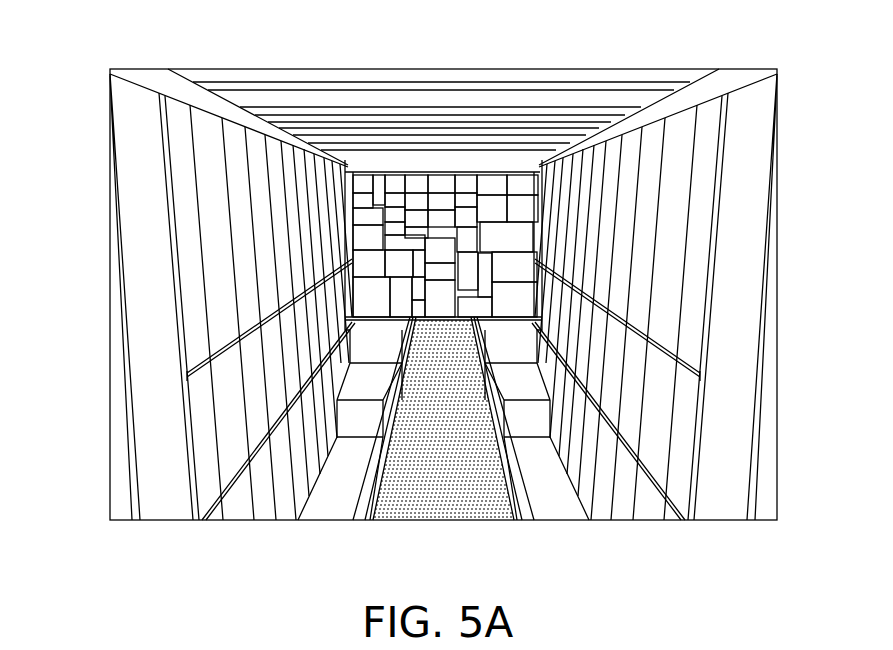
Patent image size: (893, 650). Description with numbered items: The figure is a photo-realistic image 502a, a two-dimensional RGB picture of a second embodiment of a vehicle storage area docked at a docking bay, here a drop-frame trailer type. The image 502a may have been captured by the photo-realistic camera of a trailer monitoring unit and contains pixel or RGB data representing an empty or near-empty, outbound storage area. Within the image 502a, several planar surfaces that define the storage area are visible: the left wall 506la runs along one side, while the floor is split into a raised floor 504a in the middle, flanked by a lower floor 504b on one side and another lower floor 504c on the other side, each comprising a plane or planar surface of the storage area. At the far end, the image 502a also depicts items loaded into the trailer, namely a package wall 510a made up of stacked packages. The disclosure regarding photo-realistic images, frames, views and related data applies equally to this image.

The second photo-realistic image 502a is at (346, 68).
The package wall 510a is at (507, 233).
The left wall 506la is at (218, 240).
The lower floor 504b is at (327, 483).
The raised floor 504a is at (437, 483).
The lower floor 504c is at (555, 483).